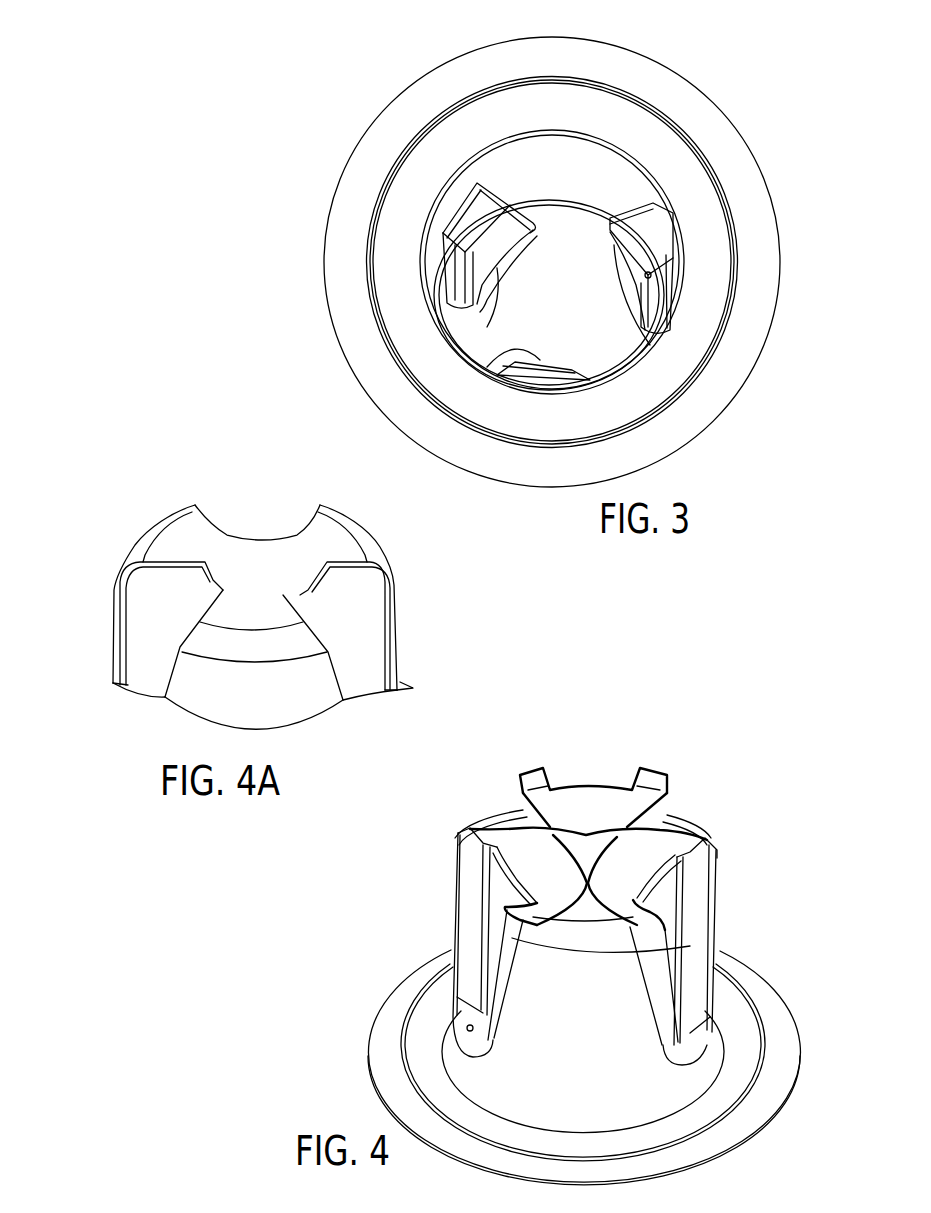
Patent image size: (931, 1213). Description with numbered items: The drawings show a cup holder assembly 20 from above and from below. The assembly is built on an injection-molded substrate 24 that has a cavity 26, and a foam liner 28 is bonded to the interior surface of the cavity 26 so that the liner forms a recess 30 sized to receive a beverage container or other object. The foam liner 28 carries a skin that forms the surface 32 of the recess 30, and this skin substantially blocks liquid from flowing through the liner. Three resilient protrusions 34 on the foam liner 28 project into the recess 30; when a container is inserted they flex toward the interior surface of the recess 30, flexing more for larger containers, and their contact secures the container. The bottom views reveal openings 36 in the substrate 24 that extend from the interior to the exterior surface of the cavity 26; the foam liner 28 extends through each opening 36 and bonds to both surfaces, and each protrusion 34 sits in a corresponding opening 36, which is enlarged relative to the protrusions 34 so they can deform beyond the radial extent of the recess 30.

In FIG. 3, the cup holder assembly 20 is at (790, 95).
In FIG. 4A, the cup holder assembly 20 is at (165, 478).
In FIG. 4, the cup holder assembly 20 is at (786, 801).
In FIG. 3, the substrate 24 is at (763, 243).
In FIG. 4, the substrate 24 is at (775, 1092).
In FIG. 3, the cavity 26 is at (458, 148).
In FIG. 3, the foam liner 28 is at (640, 140).
In FIG. 4, the foam liner 28 is at (700, 1043).
In FIG. 3, the recess 30 is at (564, 232).
In FIG. 3, the surface 32 is at (640, 190).
In FIG. 3, the protrusions 34 is at (650, 345).
In FIG. 4, the protrusions 34 is at (590, 790).
In FIG. 4A, the openings 36 is at (245, 522).